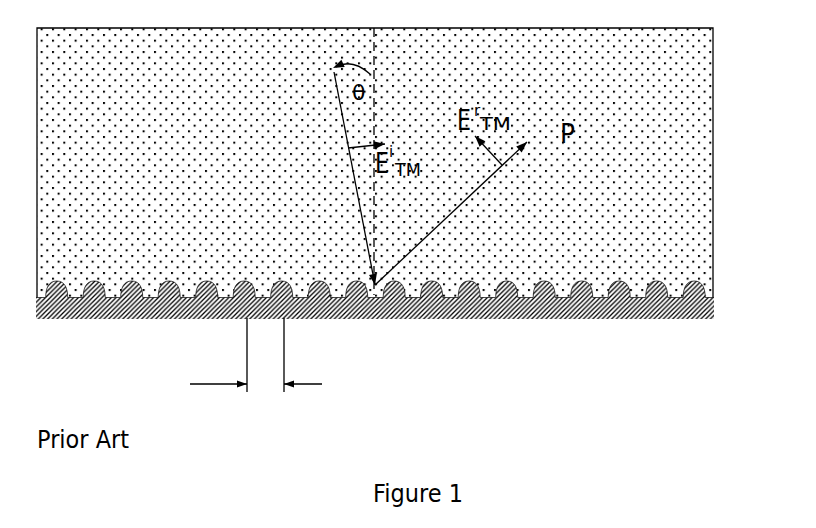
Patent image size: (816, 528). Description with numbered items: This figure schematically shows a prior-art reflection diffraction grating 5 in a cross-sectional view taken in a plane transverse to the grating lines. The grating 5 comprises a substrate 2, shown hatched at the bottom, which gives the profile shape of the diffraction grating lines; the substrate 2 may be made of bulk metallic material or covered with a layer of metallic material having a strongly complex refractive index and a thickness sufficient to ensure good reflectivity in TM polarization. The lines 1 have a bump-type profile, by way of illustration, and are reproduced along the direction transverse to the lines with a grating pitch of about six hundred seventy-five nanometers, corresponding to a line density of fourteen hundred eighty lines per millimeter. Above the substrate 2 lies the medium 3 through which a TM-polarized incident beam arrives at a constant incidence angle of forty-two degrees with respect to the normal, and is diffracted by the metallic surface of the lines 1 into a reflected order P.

The lines 1 is at (244, 282).
The substrate 2 is at (714, 303).
The dielectric medium 3 is at (666, 59).
The diffraction grating 5 is at (661, 278).